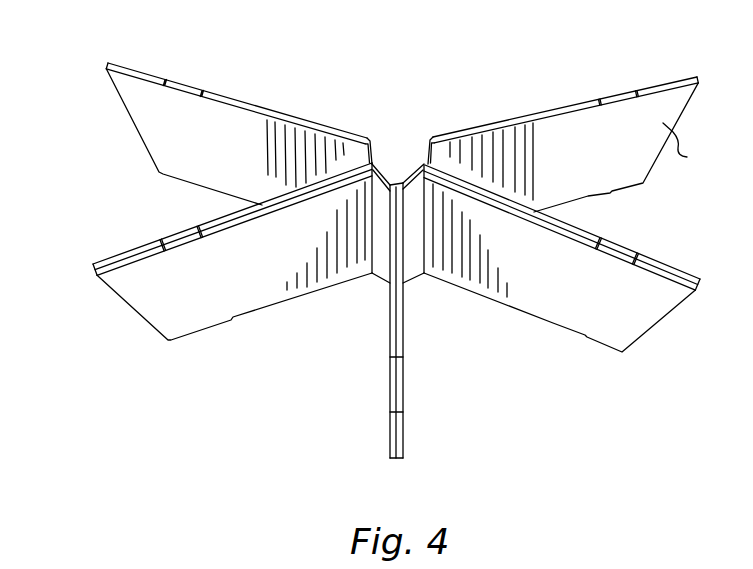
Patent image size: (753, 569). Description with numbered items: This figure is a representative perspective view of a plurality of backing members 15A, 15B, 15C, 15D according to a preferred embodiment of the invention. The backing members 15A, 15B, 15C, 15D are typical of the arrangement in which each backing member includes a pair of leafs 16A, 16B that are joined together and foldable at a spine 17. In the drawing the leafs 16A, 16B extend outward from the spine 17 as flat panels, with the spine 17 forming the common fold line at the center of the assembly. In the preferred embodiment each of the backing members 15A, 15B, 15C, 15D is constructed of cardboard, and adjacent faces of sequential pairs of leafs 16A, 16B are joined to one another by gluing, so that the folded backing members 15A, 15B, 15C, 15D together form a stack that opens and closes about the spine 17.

The backing member 15A is at (210, 114).
The backing member 15B is at (197, 276).
The backing member 15C is at (472, 333).
The backing member 15D is at (535, 70).
The leaf 16A is at (127, 84).
The leaf 16B is at (95, 268).
The spine 17 is at (430, 163).